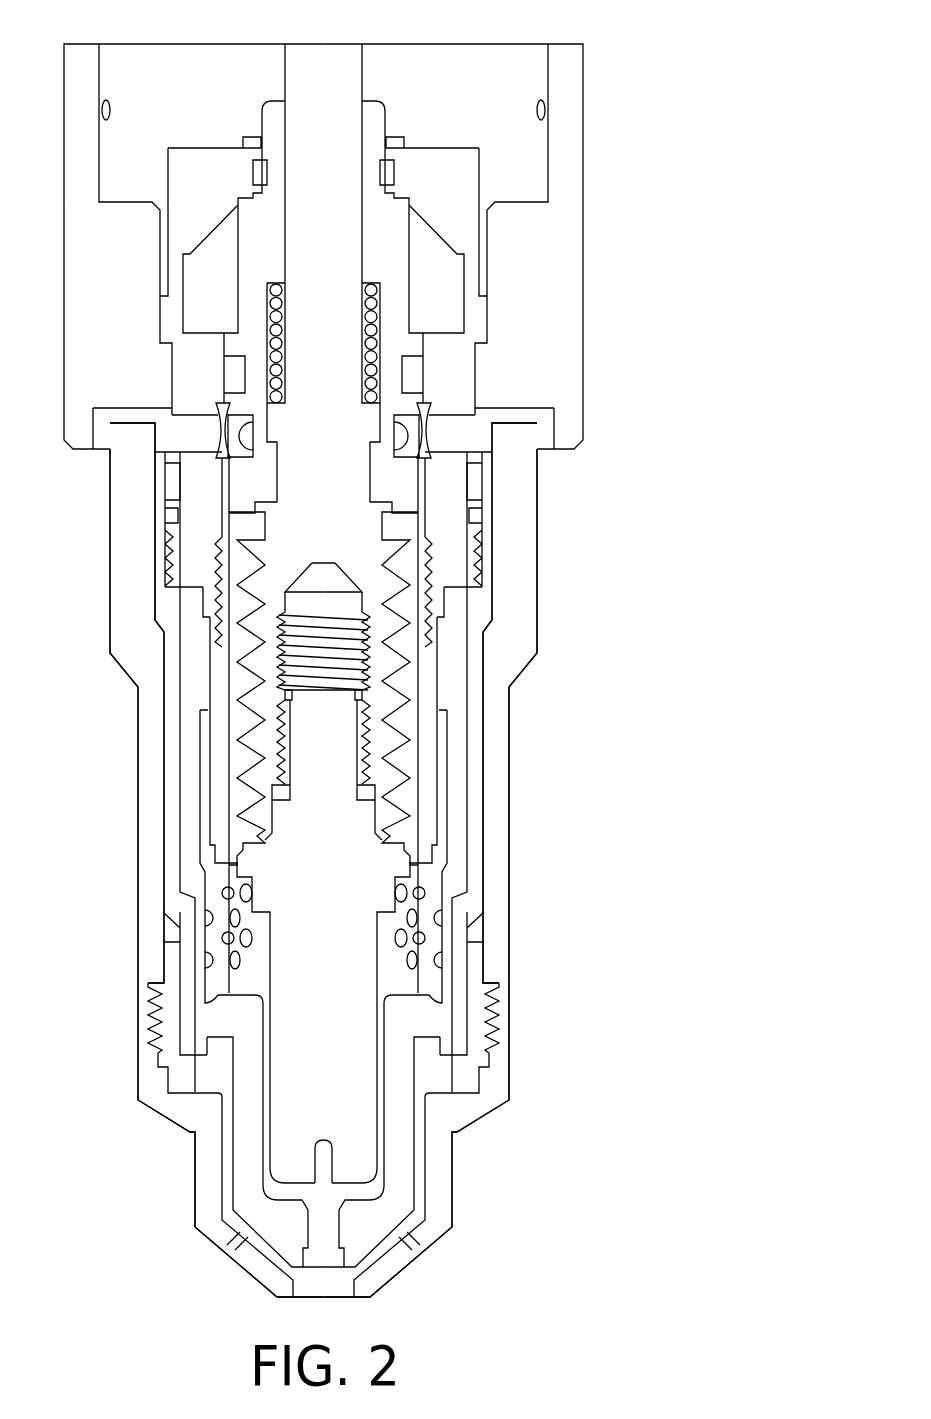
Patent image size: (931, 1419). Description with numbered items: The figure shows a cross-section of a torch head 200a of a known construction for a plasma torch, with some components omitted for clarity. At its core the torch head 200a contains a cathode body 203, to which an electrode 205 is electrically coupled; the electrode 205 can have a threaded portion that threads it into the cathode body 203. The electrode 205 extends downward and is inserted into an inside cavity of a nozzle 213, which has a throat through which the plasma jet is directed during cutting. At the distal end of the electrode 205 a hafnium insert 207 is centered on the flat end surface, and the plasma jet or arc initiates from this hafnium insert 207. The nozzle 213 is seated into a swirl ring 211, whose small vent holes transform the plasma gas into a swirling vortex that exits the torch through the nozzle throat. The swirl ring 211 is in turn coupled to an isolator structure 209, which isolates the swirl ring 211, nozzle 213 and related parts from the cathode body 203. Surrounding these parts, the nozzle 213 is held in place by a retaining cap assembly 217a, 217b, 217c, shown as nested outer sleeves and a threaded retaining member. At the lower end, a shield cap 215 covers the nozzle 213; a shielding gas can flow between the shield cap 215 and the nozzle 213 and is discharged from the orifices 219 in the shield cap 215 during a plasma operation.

The torch head 200a is at (714, 93).
The cathode body 203 is at (343, 477).
The electrode 205 is at (345, 1013).
The hafnium insert 207 is at (313, 1162).
The isolator structure 209 is at (218, 762).
The swirl ring 211 is at (432, 883).
The nozzle 213 is at (402, 1160).
The shield cap 215 is at (455, 1215).
The retaining cap assembly 217a is at (528, 572).
The retaining cap assembly 217b is at (178, 902).
The retaining cap assembly 217c is at (182, 1083).
The orifices 219 is at (425, 1237).